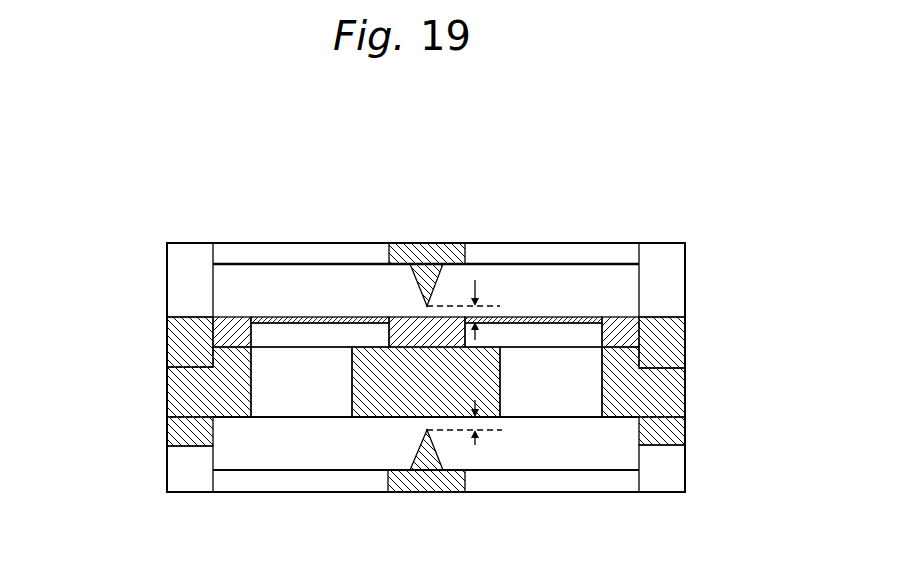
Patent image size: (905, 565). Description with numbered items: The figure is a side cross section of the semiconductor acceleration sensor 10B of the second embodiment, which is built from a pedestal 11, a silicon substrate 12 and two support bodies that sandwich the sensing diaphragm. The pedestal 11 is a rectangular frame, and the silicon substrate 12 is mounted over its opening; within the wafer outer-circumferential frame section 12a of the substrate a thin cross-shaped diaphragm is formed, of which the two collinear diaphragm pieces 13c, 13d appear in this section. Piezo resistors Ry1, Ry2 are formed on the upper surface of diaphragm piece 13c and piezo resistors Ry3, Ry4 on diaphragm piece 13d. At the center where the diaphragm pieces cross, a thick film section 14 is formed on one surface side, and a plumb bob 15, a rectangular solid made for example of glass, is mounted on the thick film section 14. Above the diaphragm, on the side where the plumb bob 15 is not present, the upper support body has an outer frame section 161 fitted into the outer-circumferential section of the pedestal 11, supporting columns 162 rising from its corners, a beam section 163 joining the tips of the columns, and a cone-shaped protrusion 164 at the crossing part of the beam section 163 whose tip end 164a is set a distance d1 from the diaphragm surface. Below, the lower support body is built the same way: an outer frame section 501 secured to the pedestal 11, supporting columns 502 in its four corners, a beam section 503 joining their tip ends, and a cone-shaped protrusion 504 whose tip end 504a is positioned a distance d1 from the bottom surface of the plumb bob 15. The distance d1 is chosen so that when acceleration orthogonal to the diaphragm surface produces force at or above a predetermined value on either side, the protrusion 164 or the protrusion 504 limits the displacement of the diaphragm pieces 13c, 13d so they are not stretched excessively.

The semiconductor acceleration sensor 10B is at (298, 162).
The pedestal 11 is at (167, 402).
The silicon substrate 12 is at (227, 316).
The wafer outer-circumferential frame section 12a is at (228, 335).
The diaphragm piece 13c is at (507, 316).
The diaphragm piece 13d is at (347, 316).
The thick film section 14 is at (500, 367).
The plumb bob 15 is at (452, 410).
The outer frame section 161 is at (167, 335).
The supporting column 162 is at (177, 271).
The beam section 163 is at (278, 253).
The protrusion 164 is at (406, 243).
The tip end 164a is at (427, 306).
The outer frame section 501 is at (167, 440).
The supporting column 502 is at (180, 473).
The beam section 503 is at (255, 482).
The protrusion 504 is at (403, 473).
The tip end 504a is at (427, 432).
The piezo resistor Ry1 is at (577, 316).
The piezo resistor Ry2 is at (532, 316).
The piezo resistor Ry3 is at (313, 316).
The piezo resistor Ry4 is at (266, 316).
The distance d1 is at (467, 370).